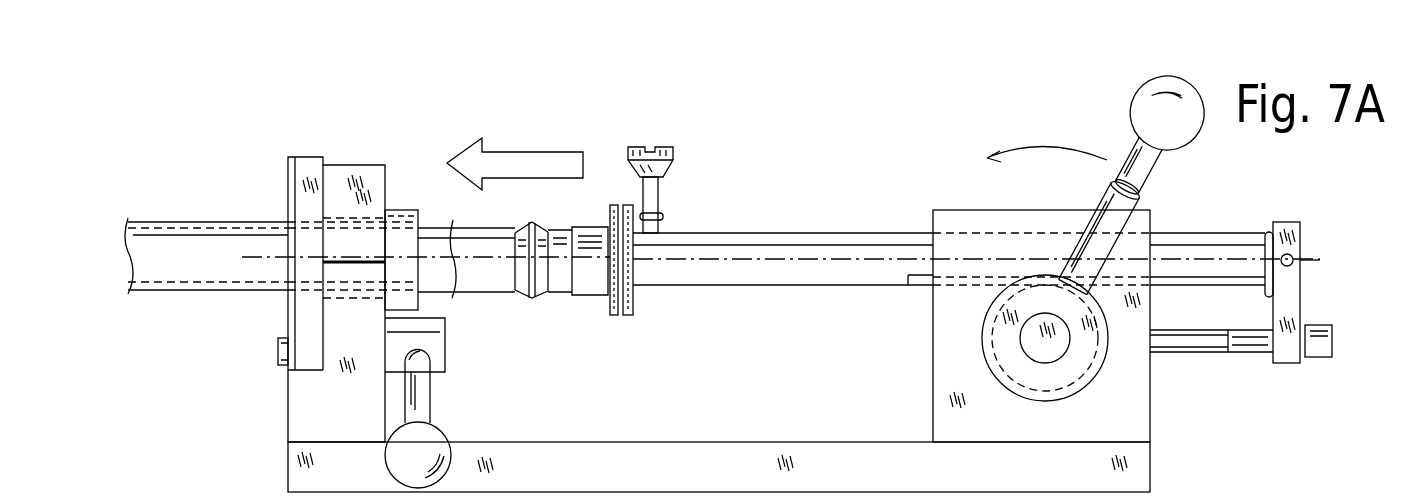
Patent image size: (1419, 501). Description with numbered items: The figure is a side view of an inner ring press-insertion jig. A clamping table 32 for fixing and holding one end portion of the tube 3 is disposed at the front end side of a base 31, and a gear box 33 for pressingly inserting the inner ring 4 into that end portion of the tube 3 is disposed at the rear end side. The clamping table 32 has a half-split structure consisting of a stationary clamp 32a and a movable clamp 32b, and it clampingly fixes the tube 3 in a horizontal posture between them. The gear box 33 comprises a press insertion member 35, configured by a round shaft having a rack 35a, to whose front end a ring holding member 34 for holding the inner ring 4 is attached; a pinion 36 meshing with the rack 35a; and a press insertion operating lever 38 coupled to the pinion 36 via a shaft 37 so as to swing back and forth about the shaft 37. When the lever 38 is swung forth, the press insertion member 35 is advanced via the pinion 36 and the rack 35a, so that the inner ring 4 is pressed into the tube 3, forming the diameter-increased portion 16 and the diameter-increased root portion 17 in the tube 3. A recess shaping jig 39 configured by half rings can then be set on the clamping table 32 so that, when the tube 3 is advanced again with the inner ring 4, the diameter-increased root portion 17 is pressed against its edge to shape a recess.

The tube 3 is at (197, 211).
The inner ring 4 is at (538, 292).
The diameter-increased portion 16 is at (537, 300).
The diameter-increased root portion 17 is at (518, 300).
The base 31 is at (758, 442).
The clamping table 32 is at (334, 149).
The stationary clamp 32a is at (300, 410).
The movable clamp 32b is at (362, 172).
The gear box 33 is at (953, 197).
The ring holding member 34 is at (608, 305).
The press insertion member 35 is at (976, 256).
The rack 35a is at (922, 285).
The pinion 36 is at (992, 355).
The shaft 37 is at (1050, 360).
The press insertion operating lever 38 is at (1163, 175).
The recess shaping jig 39 is at (405, 212).